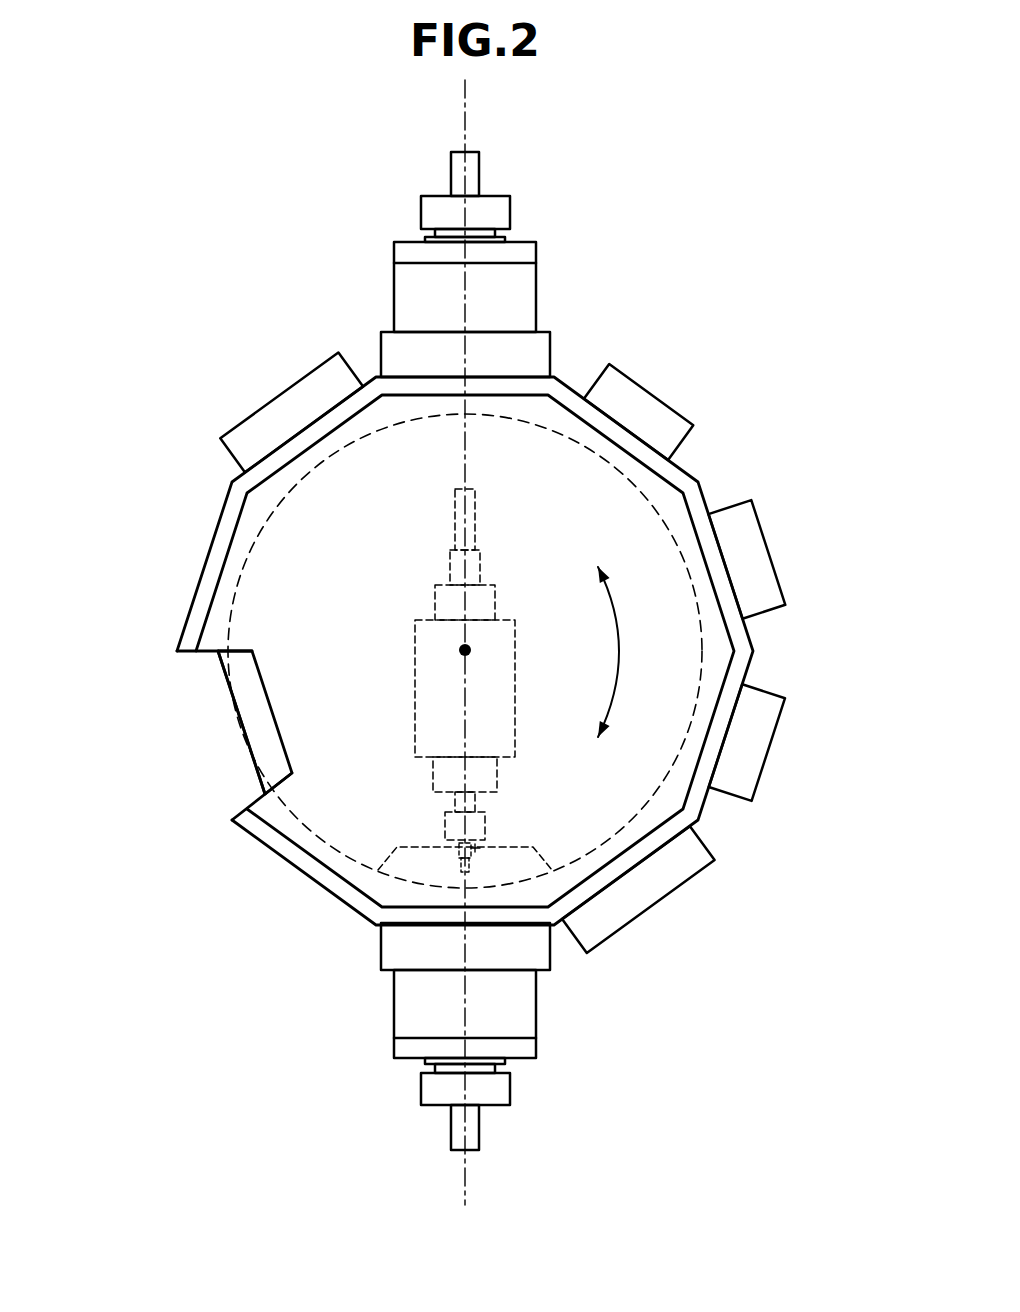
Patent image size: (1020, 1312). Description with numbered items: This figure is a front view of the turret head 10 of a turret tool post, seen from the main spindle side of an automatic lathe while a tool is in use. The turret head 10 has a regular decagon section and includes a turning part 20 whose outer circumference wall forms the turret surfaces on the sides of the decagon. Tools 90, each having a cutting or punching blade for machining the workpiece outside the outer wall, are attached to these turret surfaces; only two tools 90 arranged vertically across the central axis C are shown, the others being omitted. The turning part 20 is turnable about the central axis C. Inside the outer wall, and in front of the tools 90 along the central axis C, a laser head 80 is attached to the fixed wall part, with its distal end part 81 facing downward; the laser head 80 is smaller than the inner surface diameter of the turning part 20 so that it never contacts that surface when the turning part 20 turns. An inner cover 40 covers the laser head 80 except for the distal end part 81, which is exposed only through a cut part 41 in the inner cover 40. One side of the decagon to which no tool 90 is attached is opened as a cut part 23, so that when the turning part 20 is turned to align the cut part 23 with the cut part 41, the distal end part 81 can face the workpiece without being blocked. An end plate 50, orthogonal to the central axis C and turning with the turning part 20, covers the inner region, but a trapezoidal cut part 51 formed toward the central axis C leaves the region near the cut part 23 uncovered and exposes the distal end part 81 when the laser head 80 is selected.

The turret head 10 is at (746, 410).
The turning part 20 is at (702, 497).
The cut part 23 is at (208, 717).
The inner cover 40 is at (270, 752).
The cut part 41 is at (478, 843).
The end plate 50 is at (257, 571).
The cut part 51 is at (218, 654).
The laser head 80 is at (415, 757).
The distal end part 81 is at (460, 868).
The tool 90 is at (258, 405).
The central axis C is at (458, 651).